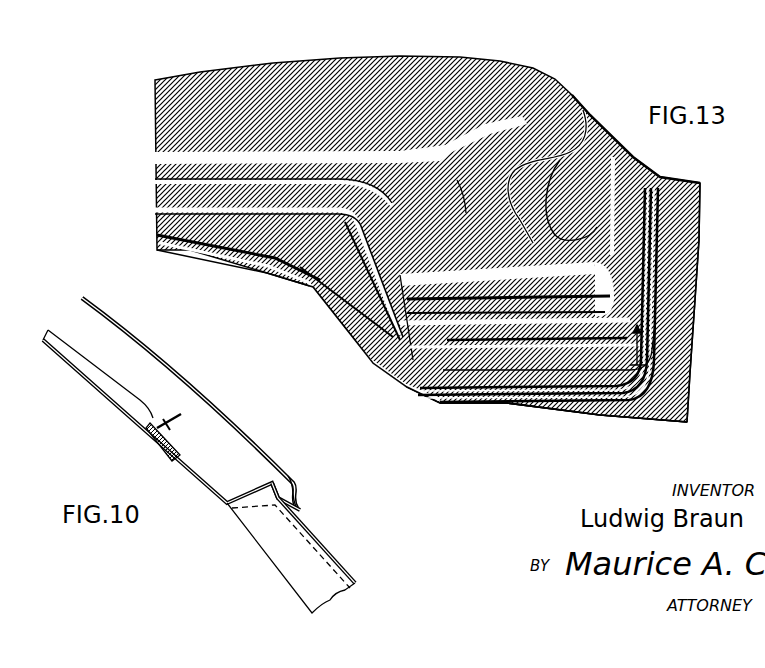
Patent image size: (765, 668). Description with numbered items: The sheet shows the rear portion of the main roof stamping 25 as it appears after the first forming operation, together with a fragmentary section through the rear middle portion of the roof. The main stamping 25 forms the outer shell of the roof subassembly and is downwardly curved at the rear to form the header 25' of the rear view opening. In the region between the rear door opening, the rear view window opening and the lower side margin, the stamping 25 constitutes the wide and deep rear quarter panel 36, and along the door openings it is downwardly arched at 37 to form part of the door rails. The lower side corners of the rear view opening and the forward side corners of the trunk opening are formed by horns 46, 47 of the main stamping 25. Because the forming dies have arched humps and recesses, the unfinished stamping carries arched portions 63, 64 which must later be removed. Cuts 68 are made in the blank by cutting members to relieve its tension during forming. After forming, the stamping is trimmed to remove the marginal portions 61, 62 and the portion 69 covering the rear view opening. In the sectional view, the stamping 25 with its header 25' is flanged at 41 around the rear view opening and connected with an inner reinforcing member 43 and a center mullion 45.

In FIG. 13, the main stamping 25 is at (427, 226).
In FIG. 10, the main stamping 25 is at (189, 395).
In FIG. 13, the header of the rear view opening 25' is at (635, 129).
In FIG. 10, the header of the rear view opening 25' is at (292, 470).
In FIG. 13, the rear quarter panel 36 is at (440, 163).
In FIG. 13, the downwardly arched portion 37 is at (185, 175).
In FIG. 10, the flange 41 is at (293, 503).
In FIG. 10, the inner reinforcing member 43 is at (206, 483).
In FIG. 10, the center mullion 45 is at (342, 556).
In FIG. 13, the horn 46 is at (603, 277).
In FIG. 13, the horn 47 is at (637, 331).
In FIG. 13, the marginal portion 61 is at (323, 300).
In FIG. 13, the marginal portion 62 is at (689, 394).
In FIG. 13, the arched portion 63 is at (628, 163).
In FIG. 13, the arched portion 64 is at (690, 210).
In FIG. 13, the cut 68 is at (538, 147).
In FIG. 13, the portion covering the rear view opening 69 is at (603, 144).